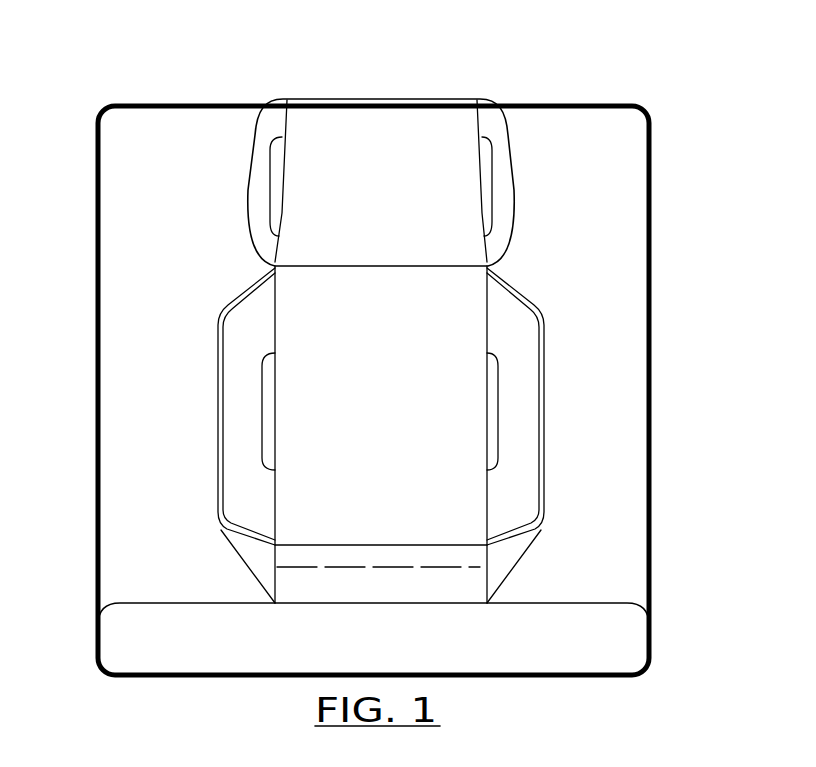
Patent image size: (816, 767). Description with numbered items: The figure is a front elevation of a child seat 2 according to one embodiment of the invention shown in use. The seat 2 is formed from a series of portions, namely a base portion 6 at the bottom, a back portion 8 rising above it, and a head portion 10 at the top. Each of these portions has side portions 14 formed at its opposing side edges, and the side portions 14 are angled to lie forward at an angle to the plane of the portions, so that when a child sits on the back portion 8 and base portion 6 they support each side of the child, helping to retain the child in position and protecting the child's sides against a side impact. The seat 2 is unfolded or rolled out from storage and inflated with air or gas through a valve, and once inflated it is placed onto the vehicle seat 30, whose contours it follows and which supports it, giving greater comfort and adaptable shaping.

The seat 2 is at (537, 300).
The base portion 6 is at (463, 585).
The back portion 8 is at (447, 442).
The head portion 10 is at (423, 145).
The side portions 14 is at (508, 178).
The vehicle seat 30 is at (570, 207).